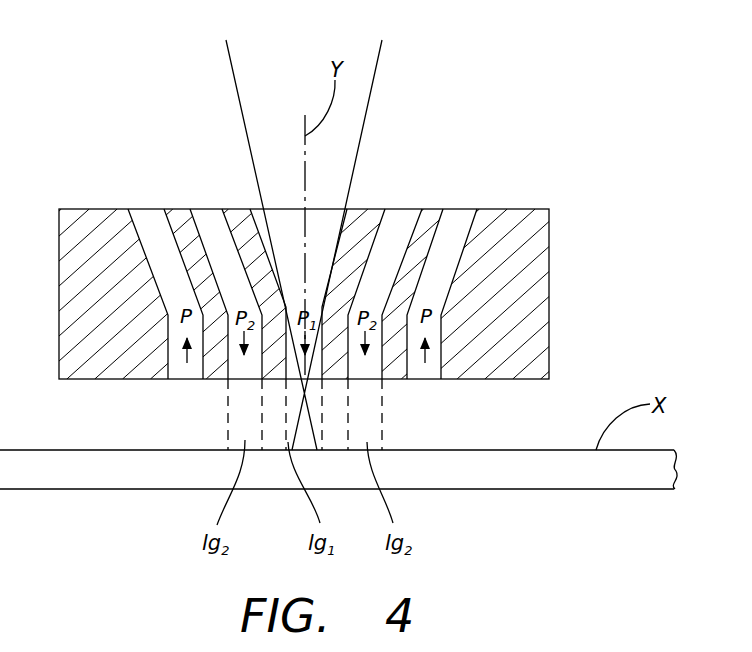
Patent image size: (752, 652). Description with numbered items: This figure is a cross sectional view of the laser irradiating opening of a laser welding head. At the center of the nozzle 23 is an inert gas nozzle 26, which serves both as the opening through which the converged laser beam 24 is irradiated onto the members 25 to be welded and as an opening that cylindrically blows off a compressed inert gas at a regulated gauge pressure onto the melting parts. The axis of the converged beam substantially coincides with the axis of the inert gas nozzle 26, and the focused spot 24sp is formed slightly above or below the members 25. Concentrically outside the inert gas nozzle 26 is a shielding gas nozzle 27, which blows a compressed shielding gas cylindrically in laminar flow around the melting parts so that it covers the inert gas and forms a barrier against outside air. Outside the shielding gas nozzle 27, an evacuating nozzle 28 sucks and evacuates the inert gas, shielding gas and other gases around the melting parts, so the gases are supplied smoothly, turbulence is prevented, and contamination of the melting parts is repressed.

The nozzle 23 is at (556, 278).
The laser beam 24 is at (376, 76).
The focused spot 24sp is at (305, 402).
The members to be welded 25 is at (583, 493).
The inert gas nozzle 26 is at (330, 226).
The shielding gas nozzle 27 is at (207, 233).
The evacuating nozzle 28 is at (153, 232).